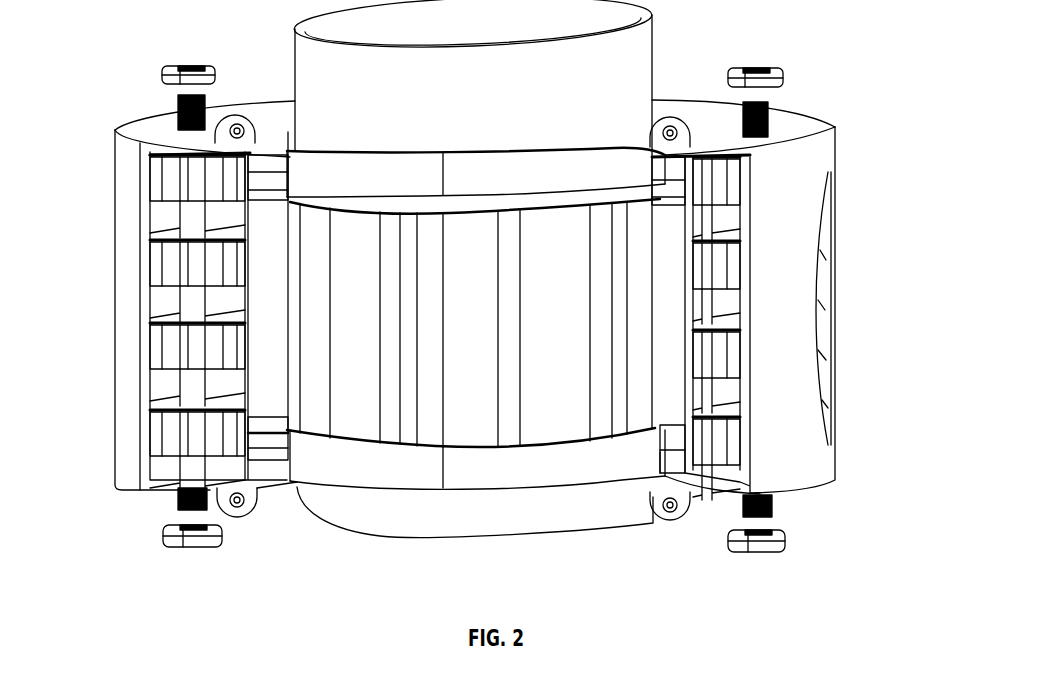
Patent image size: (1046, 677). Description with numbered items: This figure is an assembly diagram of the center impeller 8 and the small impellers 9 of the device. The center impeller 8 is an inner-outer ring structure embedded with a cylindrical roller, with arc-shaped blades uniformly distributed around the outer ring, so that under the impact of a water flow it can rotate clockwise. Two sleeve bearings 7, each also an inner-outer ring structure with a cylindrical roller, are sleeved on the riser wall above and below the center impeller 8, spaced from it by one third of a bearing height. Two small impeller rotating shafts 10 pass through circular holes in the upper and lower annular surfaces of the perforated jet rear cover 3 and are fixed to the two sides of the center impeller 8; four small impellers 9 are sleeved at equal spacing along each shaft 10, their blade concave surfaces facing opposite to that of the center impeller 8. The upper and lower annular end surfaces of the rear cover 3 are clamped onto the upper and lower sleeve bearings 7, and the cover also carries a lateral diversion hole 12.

The perforated jet rear cover 3 is at (800, 128).
The sleeve bearing 7 is at (593, 157).
The center impeller 8 is at (387, 385).
The small impeller 9 is at (175, 360).
The small impeller rotating shaft 10 is at (182, 301).
The lateral diversion hole 12 is at (838, 212).